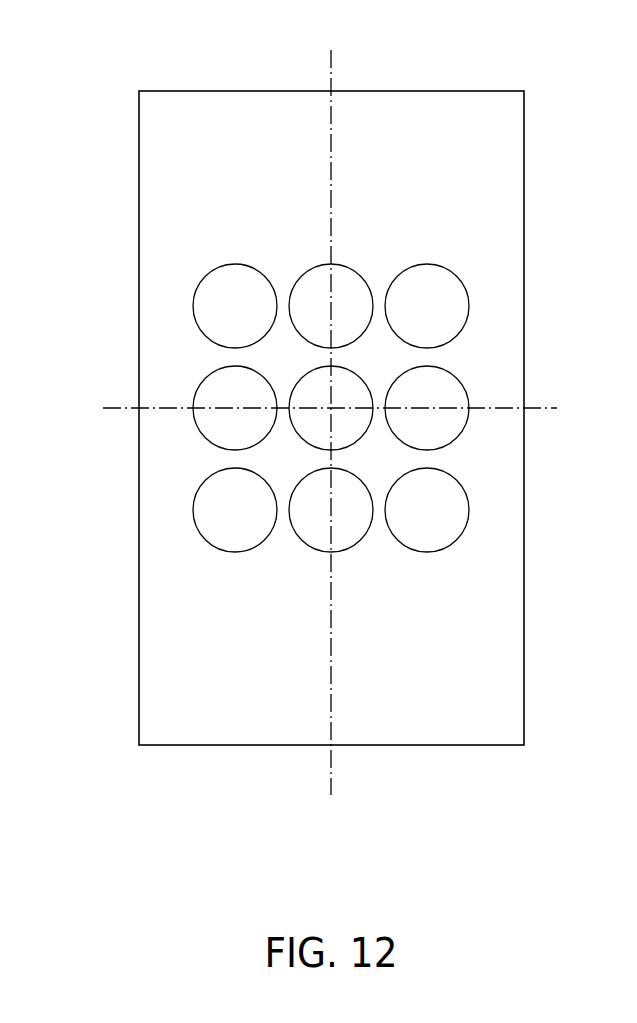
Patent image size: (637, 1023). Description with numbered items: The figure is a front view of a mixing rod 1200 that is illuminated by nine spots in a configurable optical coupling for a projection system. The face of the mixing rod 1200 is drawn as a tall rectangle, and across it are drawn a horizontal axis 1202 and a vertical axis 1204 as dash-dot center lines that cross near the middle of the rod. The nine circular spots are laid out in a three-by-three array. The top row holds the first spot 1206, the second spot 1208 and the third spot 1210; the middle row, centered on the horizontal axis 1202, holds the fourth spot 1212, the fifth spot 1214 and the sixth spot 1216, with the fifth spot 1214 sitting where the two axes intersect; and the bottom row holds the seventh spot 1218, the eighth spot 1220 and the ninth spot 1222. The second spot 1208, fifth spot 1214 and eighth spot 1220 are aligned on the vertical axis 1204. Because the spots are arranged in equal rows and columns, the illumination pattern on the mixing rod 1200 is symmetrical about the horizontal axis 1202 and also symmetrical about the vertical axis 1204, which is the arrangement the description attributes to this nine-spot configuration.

The mixing rod 1200 is at (139, 150).
The horizontal axis 1202 is at (117, 408).
The vertical axis 1204 is at (331, 52).
The first spot 1206 is at (235, 264).
The second spot 1208 is at (302, 277).
The third spot 1210 is at (428, 264).
The fourth spot 1212 is at (206, 378).
The fifth spot 1214 is at (302, 377).
The sixth spot 1216 is at (458, 378).
The seventh spot 1218 is at (235, 553).
The eighth spot 1220 is at (302, 544).
The ninth spot 1222 is at (428, 553).